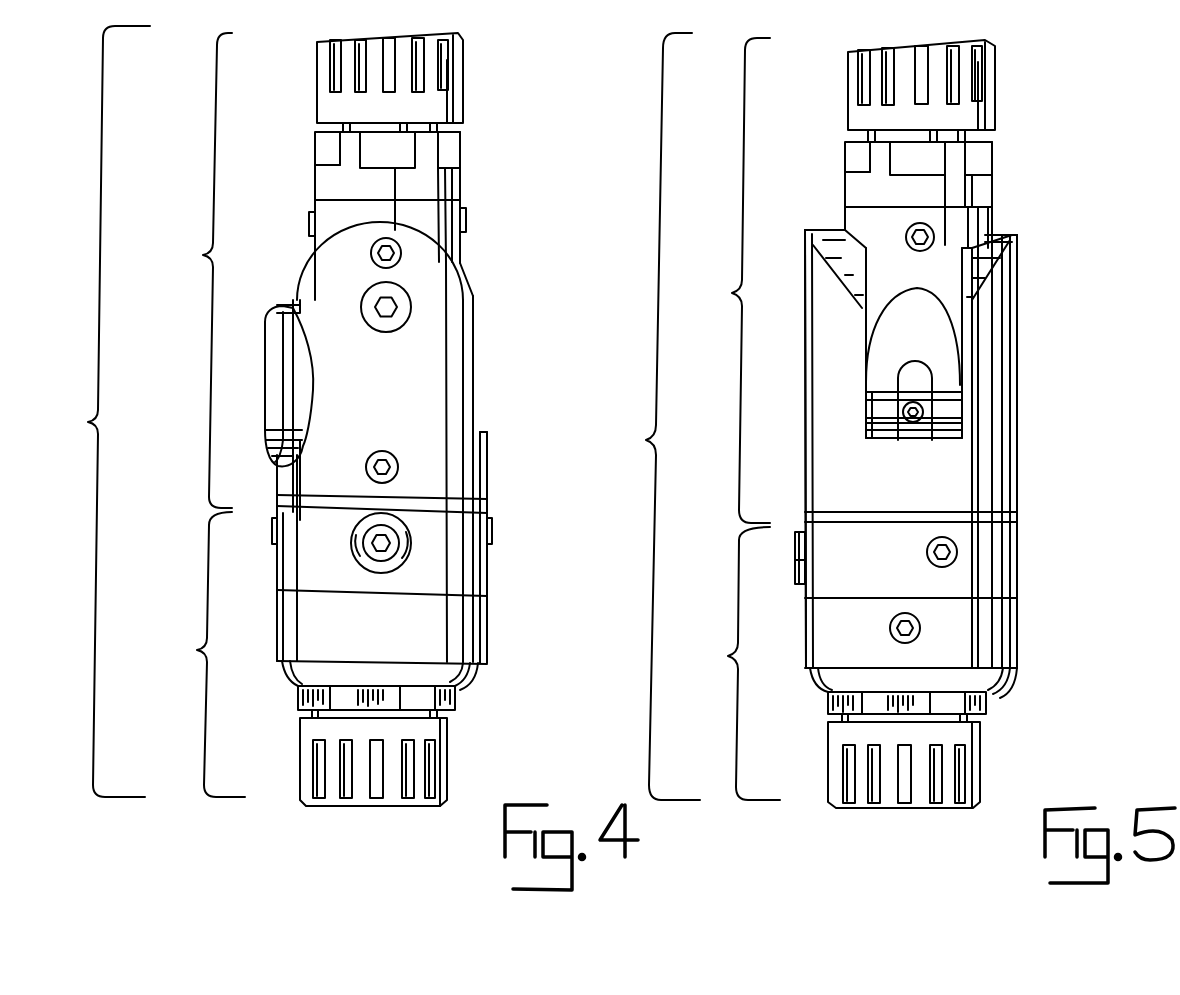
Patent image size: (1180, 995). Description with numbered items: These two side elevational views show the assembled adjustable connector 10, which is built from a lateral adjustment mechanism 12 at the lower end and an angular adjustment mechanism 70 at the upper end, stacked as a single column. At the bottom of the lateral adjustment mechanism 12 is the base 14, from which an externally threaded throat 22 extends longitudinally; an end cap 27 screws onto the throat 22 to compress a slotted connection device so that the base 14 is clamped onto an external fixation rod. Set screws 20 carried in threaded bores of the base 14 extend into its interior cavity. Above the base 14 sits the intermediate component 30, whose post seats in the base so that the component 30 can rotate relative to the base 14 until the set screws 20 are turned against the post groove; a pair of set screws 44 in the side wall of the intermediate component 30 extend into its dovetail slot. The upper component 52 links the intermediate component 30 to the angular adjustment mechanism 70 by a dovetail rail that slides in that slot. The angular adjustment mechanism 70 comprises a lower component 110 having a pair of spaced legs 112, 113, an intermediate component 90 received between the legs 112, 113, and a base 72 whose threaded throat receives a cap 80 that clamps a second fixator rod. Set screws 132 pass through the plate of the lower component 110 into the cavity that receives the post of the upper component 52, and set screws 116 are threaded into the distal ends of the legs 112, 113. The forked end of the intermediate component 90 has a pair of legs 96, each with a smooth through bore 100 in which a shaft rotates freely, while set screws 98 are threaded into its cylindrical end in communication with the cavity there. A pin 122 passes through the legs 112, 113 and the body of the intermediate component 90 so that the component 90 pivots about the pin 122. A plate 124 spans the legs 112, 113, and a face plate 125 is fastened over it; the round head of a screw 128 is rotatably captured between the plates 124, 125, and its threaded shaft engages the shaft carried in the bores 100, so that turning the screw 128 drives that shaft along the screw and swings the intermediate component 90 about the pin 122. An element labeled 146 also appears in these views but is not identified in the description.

In FIG. 4, the adjustable connector 10 is at (97, 411).
In FIG. 5, the adjustable connector 10 is at (648, 416).
In FIG. 4, the lateral adjustment mechanism 12 is at (197, 654).
In FIG. 5, the lateral adjustment mechanism 12 is at (735, 663).
In FIG. 4, the base 14 is at (498, 635).
In FIG. 5, the base 14 is at (1030, 630).
In FIG. 5, the set screws 20 is at (892, 637).
In FIG. 4, the externally threaded throat 22 is at (455, 706).
In FIG. 4, the end cap 27 is at (455, 756).
In FIG. 5, the end cap 27 is at (988, 730).
In FIG. 4, the intermediate component 30 is at (497, 574).
In FIG. 5, the intermediate component 30 is at (1030, 558).
In FIG. 4, the set screws 44 is at (493, 535).
In FIG. 5, the set screws 44 is at (925, 553).
In FIG. 4, the upper component 52 is at (487, 506).
In FIG. 5, the upper component 52 is at (1030, 514).
In FIG. 4, the angular adjustment mechanism 70 is at (189, 270).
In FIG. 5, the angular adjustment mechanism 70 is at (725, 280).
In FIG. 4, the base 72 is at (306, 180).
In FIG. 5, the base 72 is at (1004, 183).
In FIG. 4, the cap 80 is at (318, 70).
In FIG. 5, the cap 80 is at (998, 74).
In FIG. 4, the intermediate component 90 is at (474, 247).
In FIG. 5, the intermediate component 90 is at (995, 218).
In FIG. 5, the legs 96 is at (878, 440).
In FIG. 4, the set screws 98 is at (309, 221).
In FIG. 5, the set screws 98 is at (905, 233).
In FIG. 5, the through bore 100 is at (905, 440).
In FIG. 4, the lower component 110 is at (489, 350).
In FIG. 5, the lower component 110 is at (1027, 427).
In FIG. 5, the leg 112 is at (808, 312).
In FIG. 5, the leg 113 is at (1020, 282).
In FIG. 4, the set screws 116 is at (370, 262).
In FIG. 4, the pin 122 is at (405, 330).
In FIG. 4, the plate 124 is at (291, 316).
In FIG. 4, the face plate 125 is at (265, 385).
In FIG. 5, the screw 128 is at (920, 410).
In FIG. 4, the set screws 132 is at (382, 450).
In FIG. 4, the adjustment screw 146 is at (352, 567).
In FIG. 5, the adjustment screw 146 is at (795, 565).